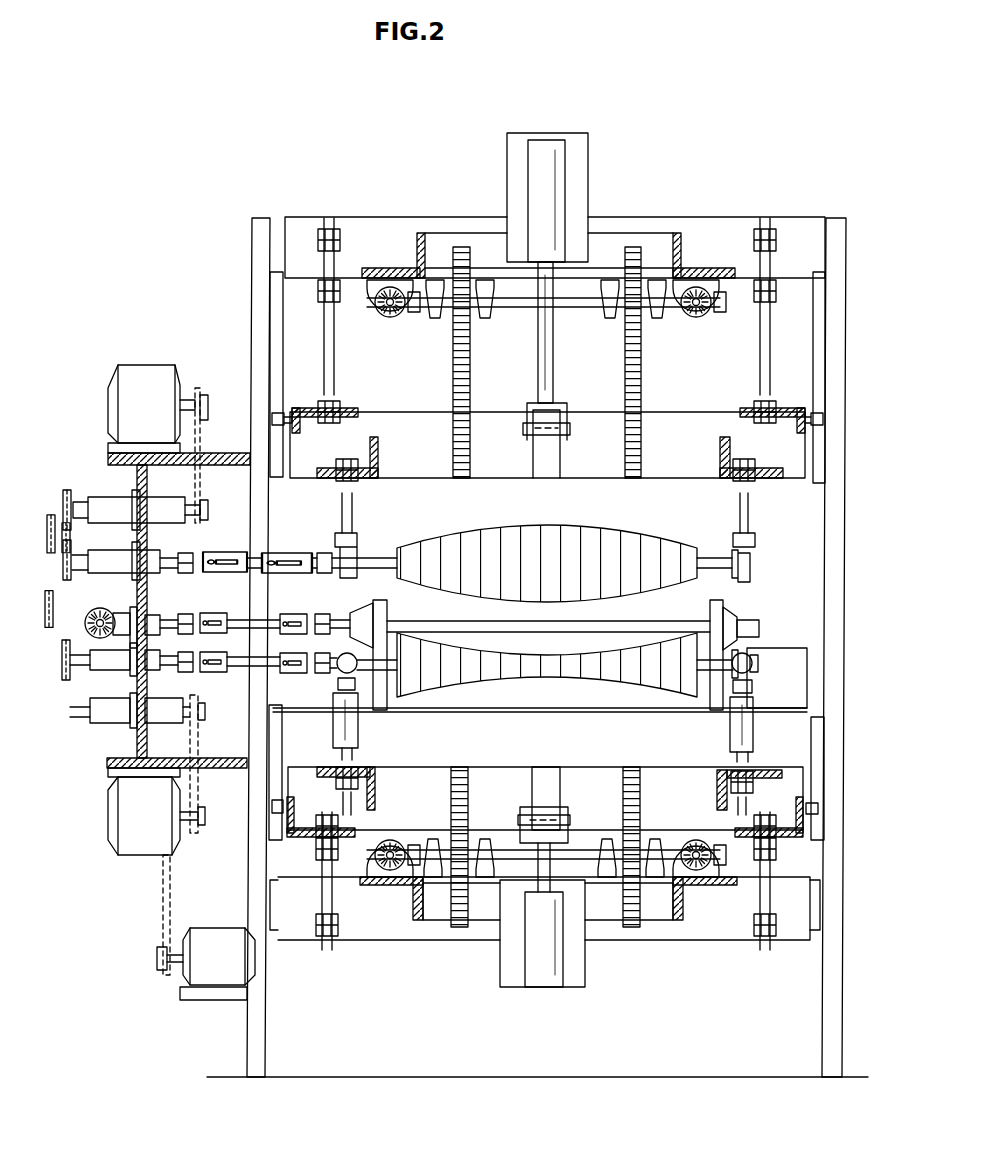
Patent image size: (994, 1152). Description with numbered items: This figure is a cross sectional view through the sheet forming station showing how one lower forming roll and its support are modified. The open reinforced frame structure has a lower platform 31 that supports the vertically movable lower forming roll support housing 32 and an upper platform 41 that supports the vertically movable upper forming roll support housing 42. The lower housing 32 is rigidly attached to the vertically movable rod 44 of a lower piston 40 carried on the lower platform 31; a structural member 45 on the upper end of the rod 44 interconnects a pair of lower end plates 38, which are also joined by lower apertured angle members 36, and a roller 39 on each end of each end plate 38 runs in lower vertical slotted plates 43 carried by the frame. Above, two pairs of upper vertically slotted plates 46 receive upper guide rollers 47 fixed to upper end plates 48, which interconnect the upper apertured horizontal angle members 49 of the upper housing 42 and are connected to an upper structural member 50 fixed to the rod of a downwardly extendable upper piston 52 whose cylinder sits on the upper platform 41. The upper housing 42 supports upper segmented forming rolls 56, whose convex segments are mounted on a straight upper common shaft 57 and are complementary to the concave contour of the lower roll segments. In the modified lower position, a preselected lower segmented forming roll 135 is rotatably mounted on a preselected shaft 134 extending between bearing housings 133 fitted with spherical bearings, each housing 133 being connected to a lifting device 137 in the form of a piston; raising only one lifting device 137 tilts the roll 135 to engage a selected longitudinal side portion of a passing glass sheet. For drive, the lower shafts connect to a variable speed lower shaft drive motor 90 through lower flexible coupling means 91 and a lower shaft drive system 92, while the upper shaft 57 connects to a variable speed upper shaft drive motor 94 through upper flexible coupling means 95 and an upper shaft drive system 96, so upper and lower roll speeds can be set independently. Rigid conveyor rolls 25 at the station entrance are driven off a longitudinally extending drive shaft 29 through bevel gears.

The conveyor rolls 25 is at (445, 625).
The longitudinally extending drive shaft 29 is at (86, 616).
The lower platform 31 is at (703, 899).
The lower forming roll support housing 32 is at (491, 756).
The lower apertured angle members 36 is at (382, 790).
The lower end plates 38 is at (442, 820).
The roller 39 is at (272, 806).
The lower piston 40 is at (543, 975).
The upper platform 41 is at (690, 235).
The upper forming roll support housing 42 is at (663, 405).
The lower vertical slotted plates 43 is at (270, 778).
The vertically movable rod 44 is at (555, 860).
The structural member 45 is at (547, 767).
The upper vertically slotted plates 46 is at (270, 371).
The upper guide rollers 47 is at (270, 418).
The upper end plates 48 is at (684, 473).
The upper apertured horizontal angle members 49 is at (380, 440).
The upper structural member 50 is at (540, 461).
The upper piston 52 is at (540, 172).
The upper segmented forming rolls 56 is at (545, 525).
The upper common shaft 57 is at (553, 330).
The lower shaft drive motor 90 is at (144, 816).
The lower flexible coupling means 91 is at (246, 670).
The lower shaft drive system 92 is at (177, 746).
The upper shaft drive motor 94 is at (151, 409).
The upper flexible coupling means 95 is at (222, 552).
The upper shaft drive system 96 is at (177, 482).
The bearing housings 133 is at (340, 672).
The preselected shaft 134 is at (387, 700).
The preselected lower segmented forming roll 135 is at (583, 675).
The lifting device 137 is at (358, 735).